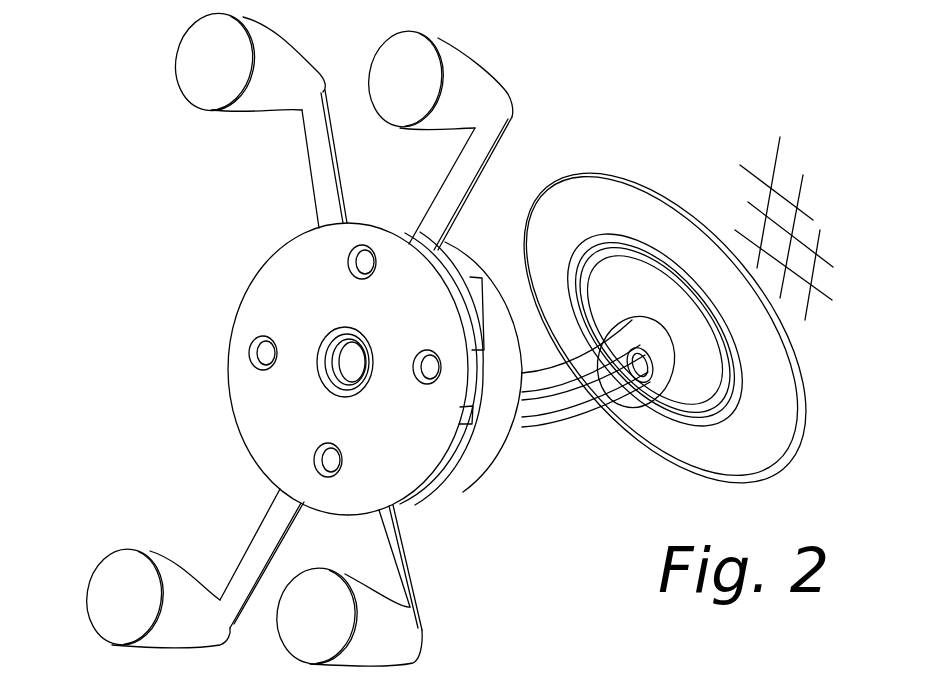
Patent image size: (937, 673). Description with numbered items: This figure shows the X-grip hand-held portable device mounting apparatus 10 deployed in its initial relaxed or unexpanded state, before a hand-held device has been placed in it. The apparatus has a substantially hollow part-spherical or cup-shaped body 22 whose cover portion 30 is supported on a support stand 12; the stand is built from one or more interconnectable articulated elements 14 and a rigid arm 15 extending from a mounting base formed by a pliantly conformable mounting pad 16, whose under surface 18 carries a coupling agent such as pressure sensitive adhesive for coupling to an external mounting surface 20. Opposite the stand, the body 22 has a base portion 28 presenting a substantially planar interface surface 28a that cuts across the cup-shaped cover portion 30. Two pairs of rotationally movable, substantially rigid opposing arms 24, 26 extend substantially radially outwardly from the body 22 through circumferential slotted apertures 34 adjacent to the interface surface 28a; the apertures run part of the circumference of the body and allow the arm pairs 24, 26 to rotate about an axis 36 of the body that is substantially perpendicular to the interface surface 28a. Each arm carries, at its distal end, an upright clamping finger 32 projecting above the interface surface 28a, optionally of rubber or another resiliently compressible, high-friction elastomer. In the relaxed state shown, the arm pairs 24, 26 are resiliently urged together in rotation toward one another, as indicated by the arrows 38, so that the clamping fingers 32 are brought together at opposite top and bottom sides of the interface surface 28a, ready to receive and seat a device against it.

The mounting apparatus 10 is at (638, 87).
The support stand 12 is at (547, 382).
The interconnectable articulated elements 14 is at (530, 418).
The rigid arm 15 is at (580, 427).
The mounting pad 16 is at (752, 464).
The under surface 18 is at (800, 377).
The mounting surface 20 is at (736, 212).
The body 22 is at (492, 463).
The arms 24 is at (461, 181).
The arms 26 is at (398, 568).
The base portion 28 is at (237, 322).
The interface surface 28a is at (330, 308).
The cover portion 30 is at (512, 434).
The clamping finger 32 is at (228, 76).
The slotted apertures 34 is at (470, 282).
The axis 36 is at (345, 362).
The arrows 38 is at (248, 135).